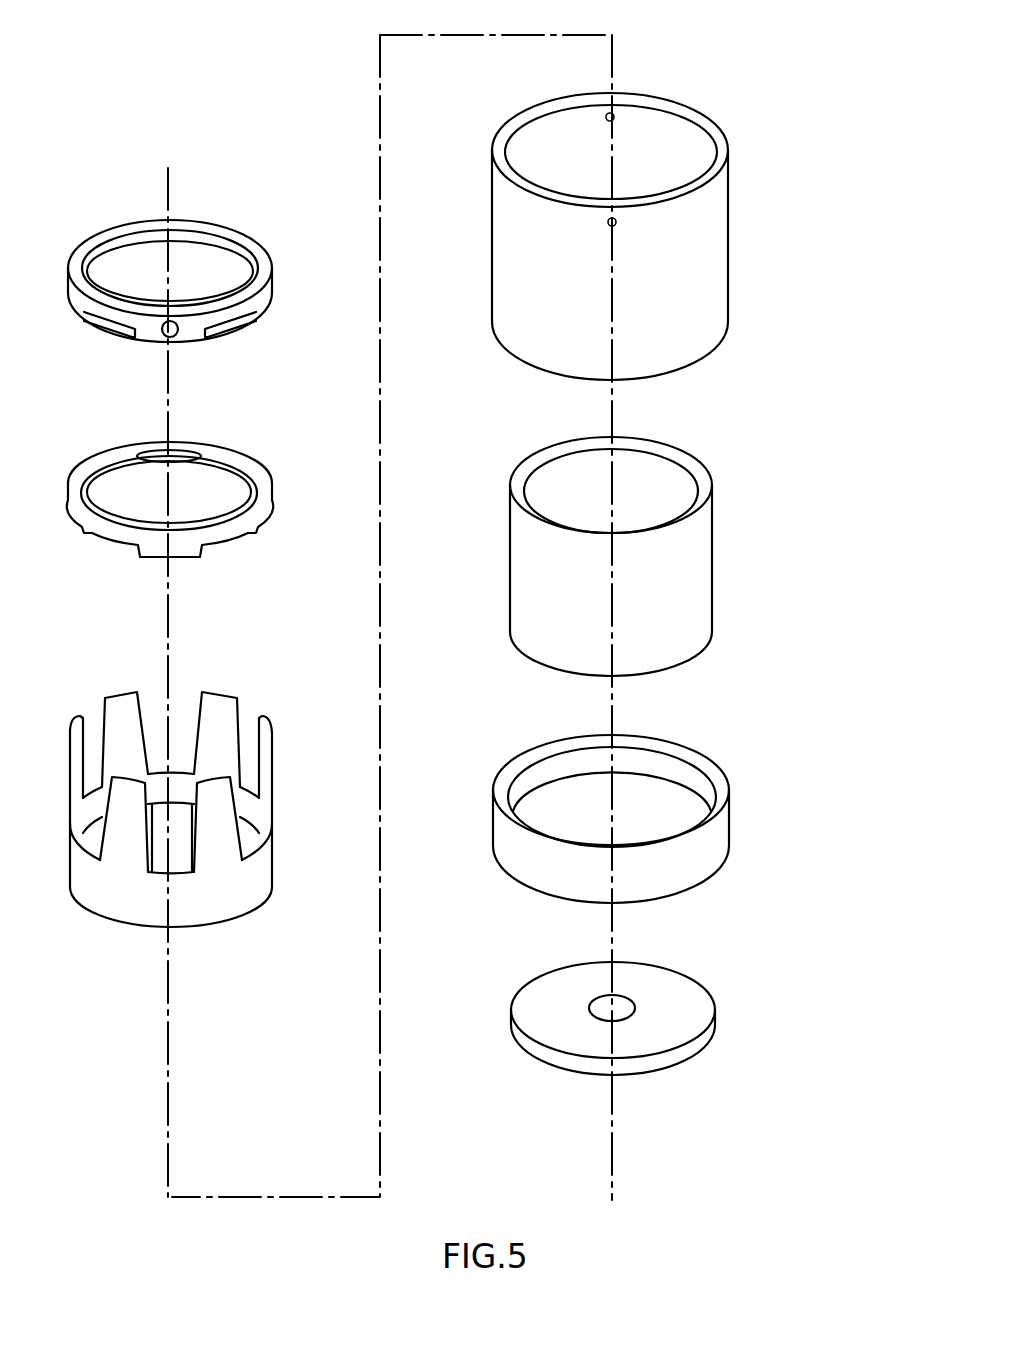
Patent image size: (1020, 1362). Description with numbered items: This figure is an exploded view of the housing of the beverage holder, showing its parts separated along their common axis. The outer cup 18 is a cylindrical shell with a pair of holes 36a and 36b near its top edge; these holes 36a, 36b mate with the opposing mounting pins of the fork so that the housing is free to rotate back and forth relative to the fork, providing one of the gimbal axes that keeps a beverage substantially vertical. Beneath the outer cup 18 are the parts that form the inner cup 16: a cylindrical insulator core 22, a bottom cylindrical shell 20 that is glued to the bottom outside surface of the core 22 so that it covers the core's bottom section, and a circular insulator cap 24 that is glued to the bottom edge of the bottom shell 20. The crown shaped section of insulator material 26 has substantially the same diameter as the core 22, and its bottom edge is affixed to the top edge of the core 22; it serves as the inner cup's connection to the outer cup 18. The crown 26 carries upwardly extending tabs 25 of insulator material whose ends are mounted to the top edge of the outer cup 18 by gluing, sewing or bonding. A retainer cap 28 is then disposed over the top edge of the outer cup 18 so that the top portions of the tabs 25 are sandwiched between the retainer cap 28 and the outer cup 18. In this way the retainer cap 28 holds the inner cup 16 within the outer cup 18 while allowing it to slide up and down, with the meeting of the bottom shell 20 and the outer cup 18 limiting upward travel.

The inner cup 16 is at (487, 1047).
The outer cup 18 is at (729, 250).
The bottom cylindrical shell 20 is at (733, 835).
The cylindrical insulator core 22 is at (713, 567).
The insulator cap 24 is at (715, 1020).
The tabs 25 is at (120, 692).
The crown shaped section of insulator material 26 is at (151, 812).
The retainer cap 28 is at (270, 545).
The hole 36a is at (614, 118).
The hole 36b is at (609, 228).